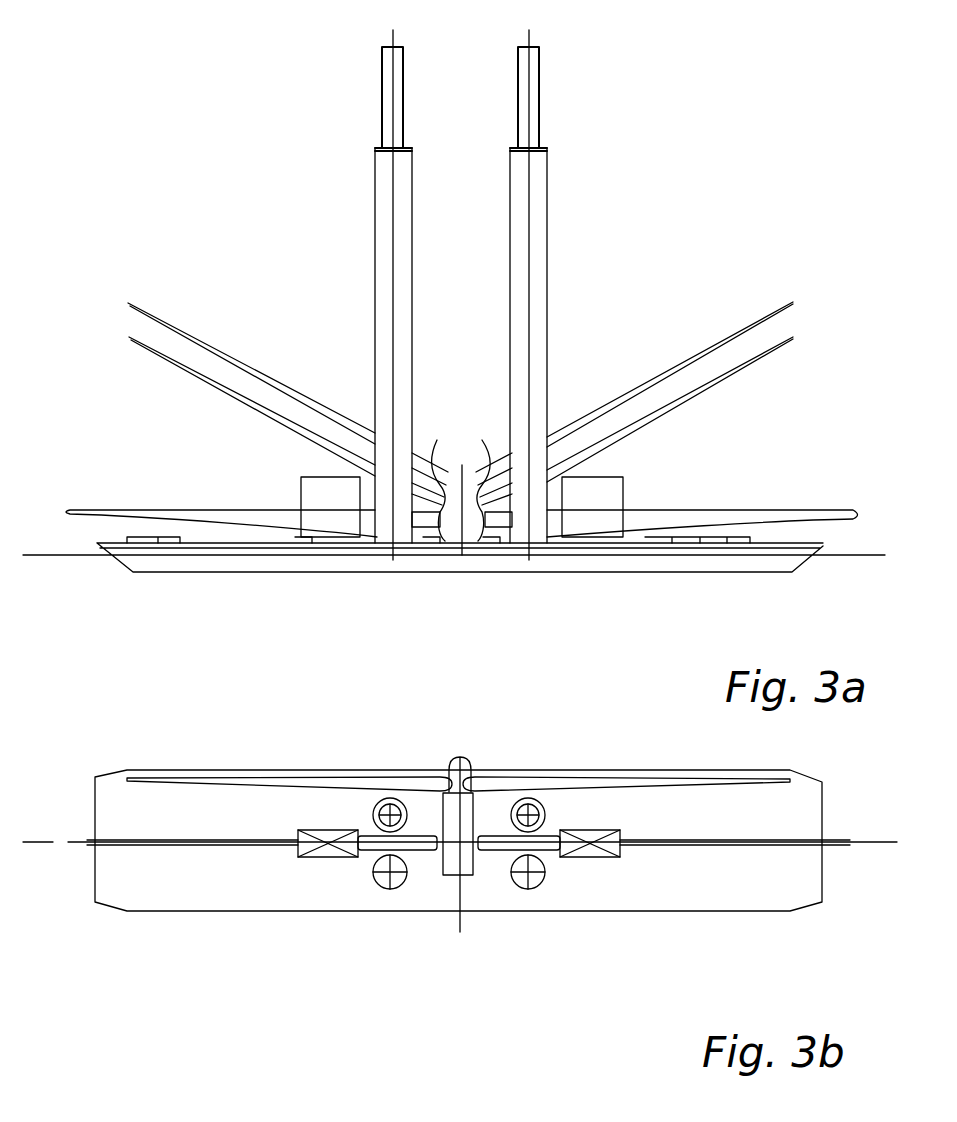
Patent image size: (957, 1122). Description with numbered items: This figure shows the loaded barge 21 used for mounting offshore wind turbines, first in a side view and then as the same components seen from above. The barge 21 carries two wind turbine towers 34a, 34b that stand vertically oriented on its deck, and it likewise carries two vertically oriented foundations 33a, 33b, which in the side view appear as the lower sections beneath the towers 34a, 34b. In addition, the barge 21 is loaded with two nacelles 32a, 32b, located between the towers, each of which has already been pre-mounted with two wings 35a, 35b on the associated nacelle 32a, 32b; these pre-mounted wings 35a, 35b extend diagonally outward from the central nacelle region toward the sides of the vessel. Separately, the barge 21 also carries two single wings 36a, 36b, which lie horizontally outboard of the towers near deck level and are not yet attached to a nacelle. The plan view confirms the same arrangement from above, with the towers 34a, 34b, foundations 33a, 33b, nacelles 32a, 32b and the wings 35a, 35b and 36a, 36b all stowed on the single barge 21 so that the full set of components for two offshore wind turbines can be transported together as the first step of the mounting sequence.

In FIG. 3A, the barge 21 is at (818, 543).
In FIG. 3A, the nacelle 32a is at (434, 478).
In FIG. 3A, the nacelle 32b is at (470, 480).
In FIG. 3B, the nacelle 32b is at (466, 758).
In FIG. 3A, the foundation 33a is at (375, 323).
In FIG. 3B, the foundation 33a is at (378, 887).
In FIG. 3A, the foundation 33b is at (547, 248).
In FIG. 3B, the foundation 33b is at (541, 885).
In FIG. 3A, the wind turbine tower 34a is at (382, 97).
In FIG. 3B, the wind turbine tower 34a is at (378, 801).
In FIG. 3A, the wind turbine tower 34b is at (539, 83).
In FIG. 3A, the wing 35a is at (157, 352).
In FIG. 3A, the wing 35b is at (170, 324).
In FIG. 3B, the wing 35b is at (540, 798).
In FIG. 3A, the single wing 36a is at (152, 512).
In FIG. 3A, the single wing 36b is at (703, 508).